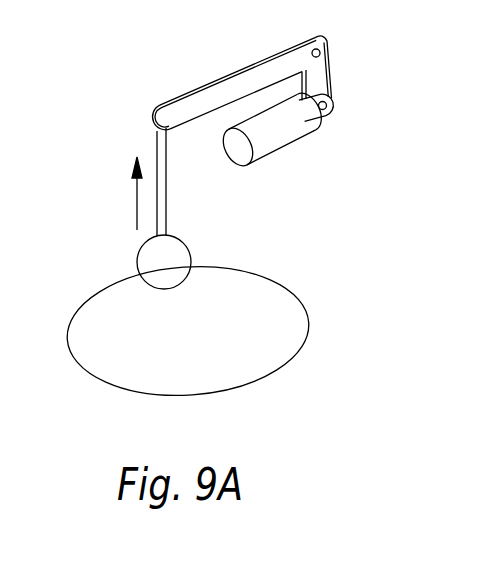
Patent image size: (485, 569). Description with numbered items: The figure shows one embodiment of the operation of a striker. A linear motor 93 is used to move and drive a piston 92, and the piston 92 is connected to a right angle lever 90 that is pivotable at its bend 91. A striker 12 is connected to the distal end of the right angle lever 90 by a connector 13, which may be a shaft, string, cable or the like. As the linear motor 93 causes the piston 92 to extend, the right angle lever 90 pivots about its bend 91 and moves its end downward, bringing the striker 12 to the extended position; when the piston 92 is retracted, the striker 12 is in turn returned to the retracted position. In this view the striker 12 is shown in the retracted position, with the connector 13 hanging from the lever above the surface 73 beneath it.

The right angle lever 90 is at (208, 97).
The bend 91 is at (322, 68).
The piston 92 is at (318, 122).
The linear motor 93 is at (283, 153).
The connector 13 is at (157, 140).
The striker 12 is at (191, 255).
The base platform 73 is at (100, 313).